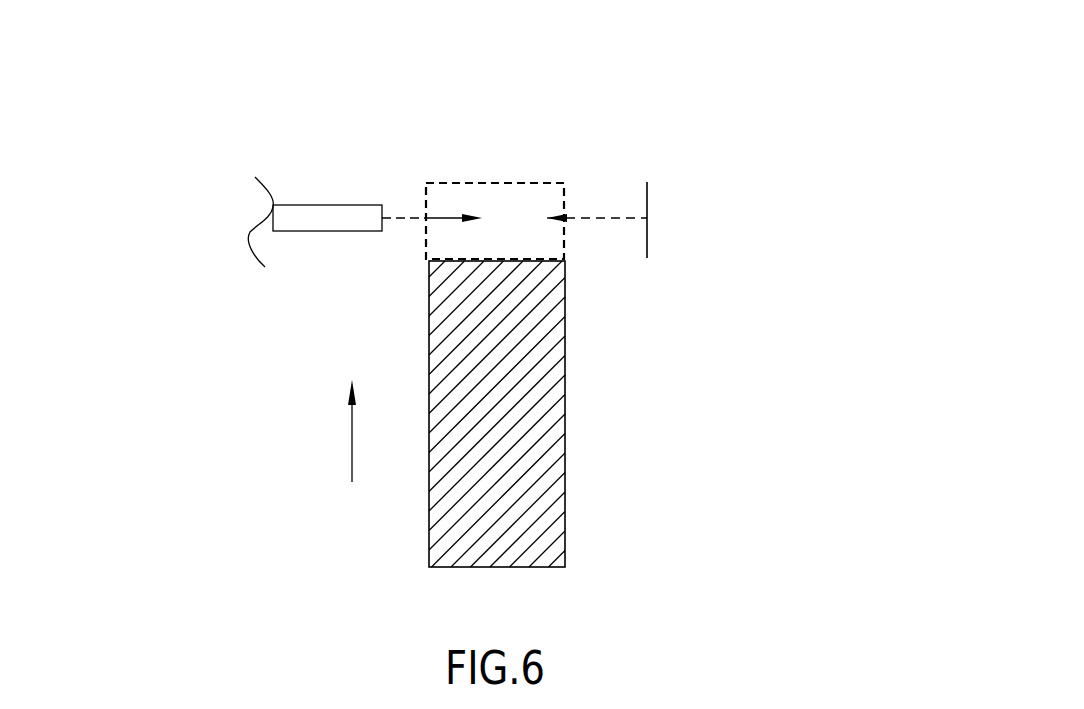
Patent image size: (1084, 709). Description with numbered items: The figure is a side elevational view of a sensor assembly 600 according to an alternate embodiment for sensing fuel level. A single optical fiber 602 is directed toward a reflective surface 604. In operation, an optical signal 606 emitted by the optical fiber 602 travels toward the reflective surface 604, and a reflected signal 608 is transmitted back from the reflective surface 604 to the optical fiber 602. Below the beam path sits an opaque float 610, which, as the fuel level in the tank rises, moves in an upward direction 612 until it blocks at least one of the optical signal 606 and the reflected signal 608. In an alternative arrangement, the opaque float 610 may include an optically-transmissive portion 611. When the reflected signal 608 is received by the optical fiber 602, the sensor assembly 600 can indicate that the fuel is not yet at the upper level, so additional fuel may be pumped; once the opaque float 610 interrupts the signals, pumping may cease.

The sensor assembly 600 is at (583, 88).
The optical fiber 602 is at (337, 205).
The reflective surface 604 is at (647, 240).
The optical signal 606 is at (427, 218).
The reflected signal 608 is at (595, 218).
The opaque float 610 is at (565, 390).
The optically-transmissive portion 611 is at (475, 183).
The upward direction 612 is at (352, 440).